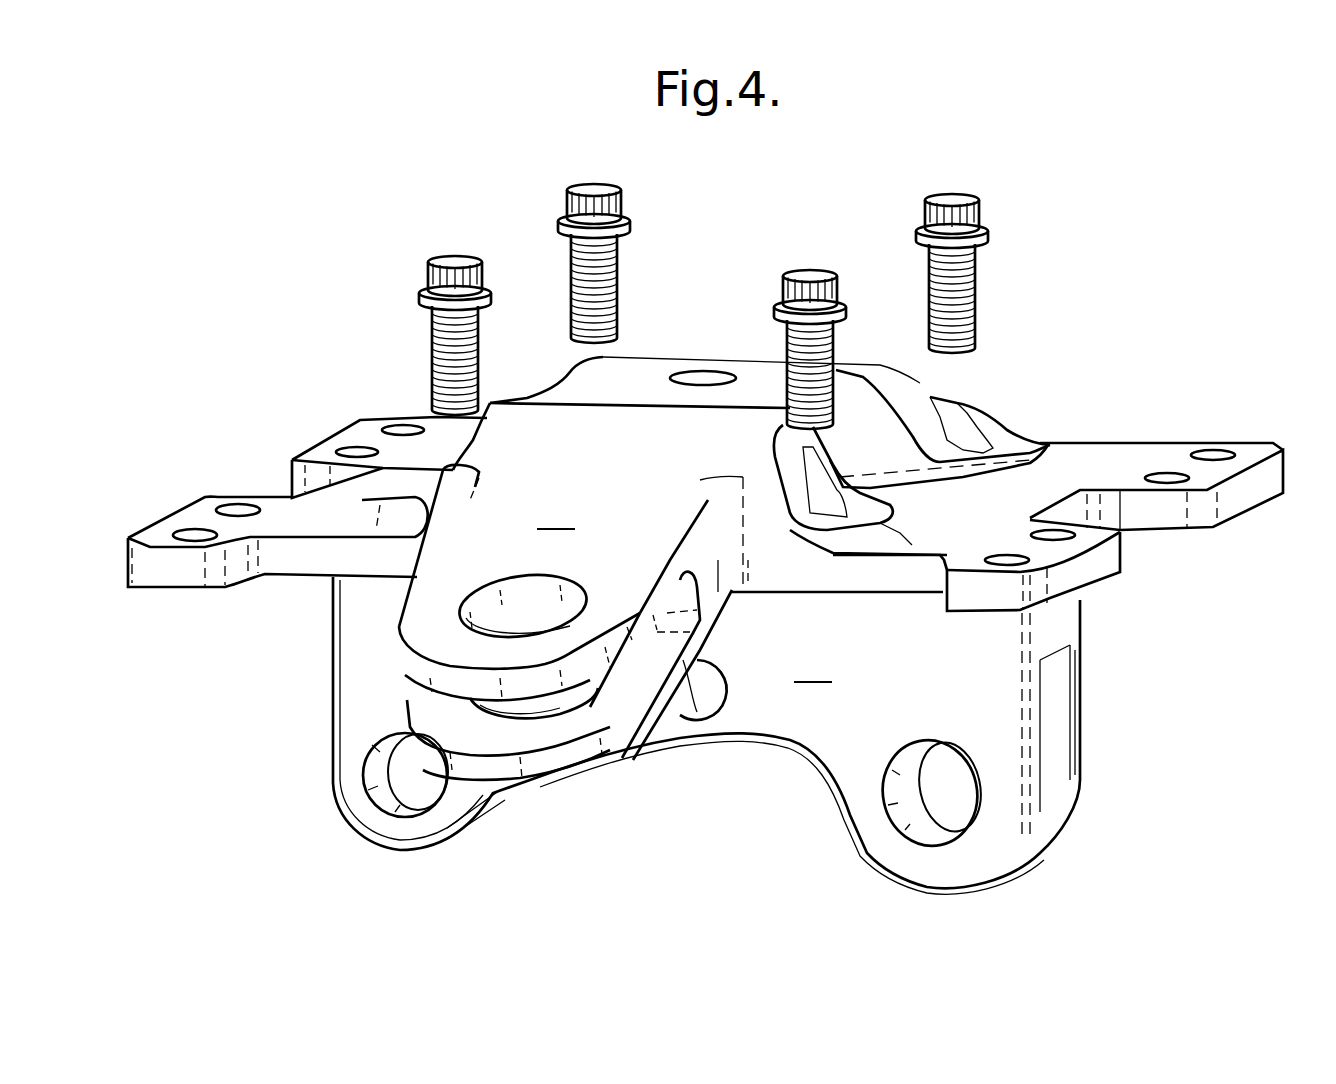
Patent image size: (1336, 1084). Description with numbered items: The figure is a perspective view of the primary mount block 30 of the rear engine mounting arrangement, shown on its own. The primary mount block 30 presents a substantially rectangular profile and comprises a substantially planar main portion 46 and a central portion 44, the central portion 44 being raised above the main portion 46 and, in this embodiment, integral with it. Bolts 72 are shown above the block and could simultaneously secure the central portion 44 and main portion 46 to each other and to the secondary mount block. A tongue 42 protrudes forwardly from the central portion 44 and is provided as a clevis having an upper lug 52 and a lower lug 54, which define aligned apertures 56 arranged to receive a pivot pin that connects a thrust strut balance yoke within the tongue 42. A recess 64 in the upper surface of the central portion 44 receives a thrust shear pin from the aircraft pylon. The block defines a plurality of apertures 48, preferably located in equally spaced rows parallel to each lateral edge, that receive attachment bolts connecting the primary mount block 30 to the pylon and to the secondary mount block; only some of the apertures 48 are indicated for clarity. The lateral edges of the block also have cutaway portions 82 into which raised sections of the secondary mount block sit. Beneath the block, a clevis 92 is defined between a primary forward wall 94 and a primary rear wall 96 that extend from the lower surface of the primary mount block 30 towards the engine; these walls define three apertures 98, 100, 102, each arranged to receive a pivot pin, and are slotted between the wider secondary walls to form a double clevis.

The primary mount block 30 is at (330, 230).
The bolts 72 is at (460, 260).
The central portion 44 is at (637, 370).
The recess 64 is at (704, 376).
The apertures 48 is at (402, 430).
The cutaway portions 82 is at (275, 487).
The main portion 46 is at (280, 520).
The tongue 42 is at (573, 611).
The upper lug 52 is at (417, 612).
The lower lug 54 is at (422, 700).
The apertures 56 is at (523, 710).
The clevis 92 is at (956, 893).
The primary forward wall 94 is at (812, 666).
The primary rear wall 96 is at (1057, 753).
The aperture 98 is at (410, 797).
The aperture 100 is at (680, 705).
The aperture 102 is at (920, 810).